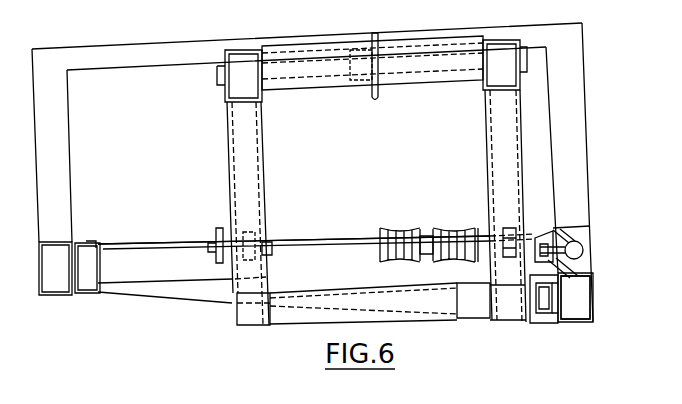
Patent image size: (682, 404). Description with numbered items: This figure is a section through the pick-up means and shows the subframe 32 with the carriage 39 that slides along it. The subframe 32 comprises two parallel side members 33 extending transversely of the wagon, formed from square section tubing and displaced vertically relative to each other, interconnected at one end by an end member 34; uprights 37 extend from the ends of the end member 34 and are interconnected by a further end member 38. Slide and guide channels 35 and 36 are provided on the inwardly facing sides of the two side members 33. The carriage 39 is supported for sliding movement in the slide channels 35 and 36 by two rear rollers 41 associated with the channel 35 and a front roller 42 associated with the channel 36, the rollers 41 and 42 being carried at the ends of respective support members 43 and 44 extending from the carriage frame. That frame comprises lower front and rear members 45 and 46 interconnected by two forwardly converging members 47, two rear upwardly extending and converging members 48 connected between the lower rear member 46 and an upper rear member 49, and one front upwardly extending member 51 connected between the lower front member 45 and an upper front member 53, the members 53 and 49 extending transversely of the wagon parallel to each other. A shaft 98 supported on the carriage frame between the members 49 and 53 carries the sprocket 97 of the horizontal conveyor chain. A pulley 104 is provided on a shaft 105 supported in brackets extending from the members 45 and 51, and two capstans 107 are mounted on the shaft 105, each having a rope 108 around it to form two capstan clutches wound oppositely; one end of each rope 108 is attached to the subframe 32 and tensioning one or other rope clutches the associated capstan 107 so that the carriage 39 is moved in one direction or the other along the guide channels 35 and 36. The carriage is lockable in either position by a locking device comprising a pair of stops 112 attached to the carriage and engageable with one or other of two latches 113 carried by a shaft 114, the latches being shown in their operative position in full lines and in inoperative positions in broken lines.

The subframe 32 is at (80, 300).
The side members 33 is at (52, 297).
The end member 34 is at (173, 293).
The slide and guide channel 35 is at (93, 242).
The slide and guide channel 36 is at (585, 283).
The uprights 37 is at (62, 158).
The further end member 38 is at (152, 68).
The carriage 39 is at (282, 229).
The rear rollers 41 is at (90, 297).
The front roller 42 is at (560, 320).
The support member 43 is at (522, 318).
The support member 44 is at (185, 245).
The lower front member 45 is at (484, 320).
The lower rear member 46 is at (233, 319).
The forwardly converging members 47 is at (448, 310).
The rear upwardly extending and converging members 48 is at (229, 154).
The upper rear member 49 is at (224, 96).
The front upwardly extending member 51 is at (494, 162).
The upper front member 53 is at (483, 90).
The sprocket 97 is at (378, 96).
The shaft 98 is at (319, 78).
The pulley 104 is at (217, 234).
The shaft 105 is at (312, 248).
The capstans 107 is at (428, 228).
The rope 108 is at (387, 228).
The stops 112 is at (533, 240).
The latches 113 is at (573, 268).
The shaft 114 is at (576, 244).